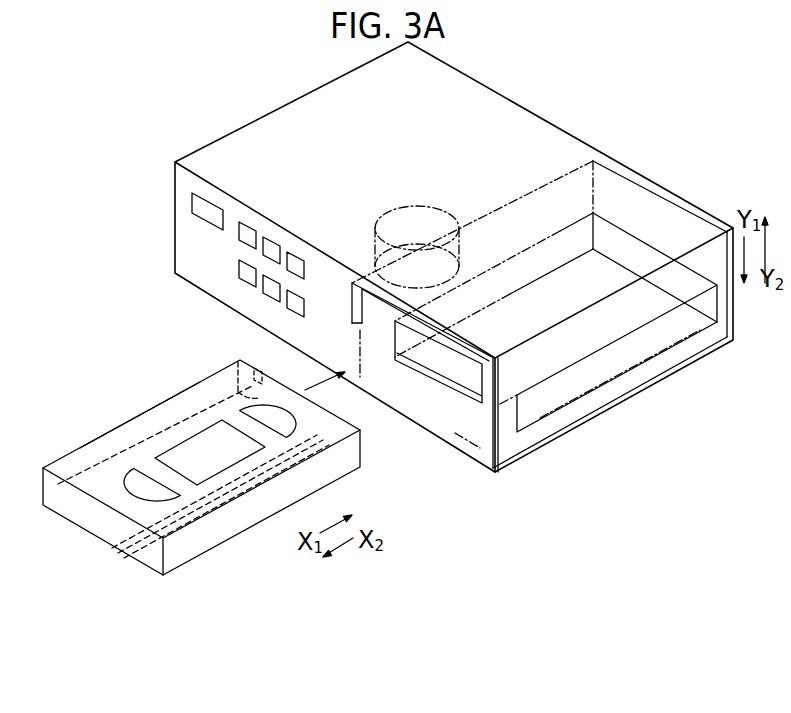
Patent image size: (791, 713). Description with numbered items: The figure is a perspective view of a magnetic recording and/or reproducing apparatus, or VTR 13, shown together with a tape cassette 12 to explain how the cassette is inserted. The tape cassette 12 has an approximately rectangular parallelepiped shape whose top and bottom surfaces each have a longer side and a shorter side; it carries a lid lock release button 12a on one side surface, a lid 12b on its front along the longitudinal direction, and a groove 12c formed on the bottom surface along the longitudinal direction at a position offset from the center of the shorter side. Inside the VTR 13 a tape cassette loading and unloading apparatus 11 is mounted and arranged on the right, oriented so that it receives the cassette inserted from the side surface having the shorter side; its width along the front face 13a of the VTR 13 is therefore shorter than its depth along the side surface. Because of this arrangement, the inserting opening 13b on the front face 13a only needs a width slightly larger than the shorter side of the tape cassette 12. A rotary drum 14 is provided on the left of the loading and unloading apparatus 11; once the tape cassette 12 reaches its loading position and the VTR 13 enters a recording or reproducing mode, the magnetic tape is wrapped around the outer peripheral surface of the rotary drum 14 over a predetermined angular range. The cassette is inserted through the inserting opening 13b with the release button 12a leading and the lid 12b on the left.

The tape cassette loading and unloading apparatus 11 is at (612, 393).
The tape cassette 12 is at (244, 522).
The lid lock release button 12a is at (257, 382).
The lid 12b is at (133, 420).
The groove 12c is at (116, 550).
The magnetic recording and/or reproducing apparatus 13 is at (249, 120).
The front face 13a is at (233, 298).
The inserting opening 13b is at (433, 362).
The rotary drum 14 is at (420, 204).